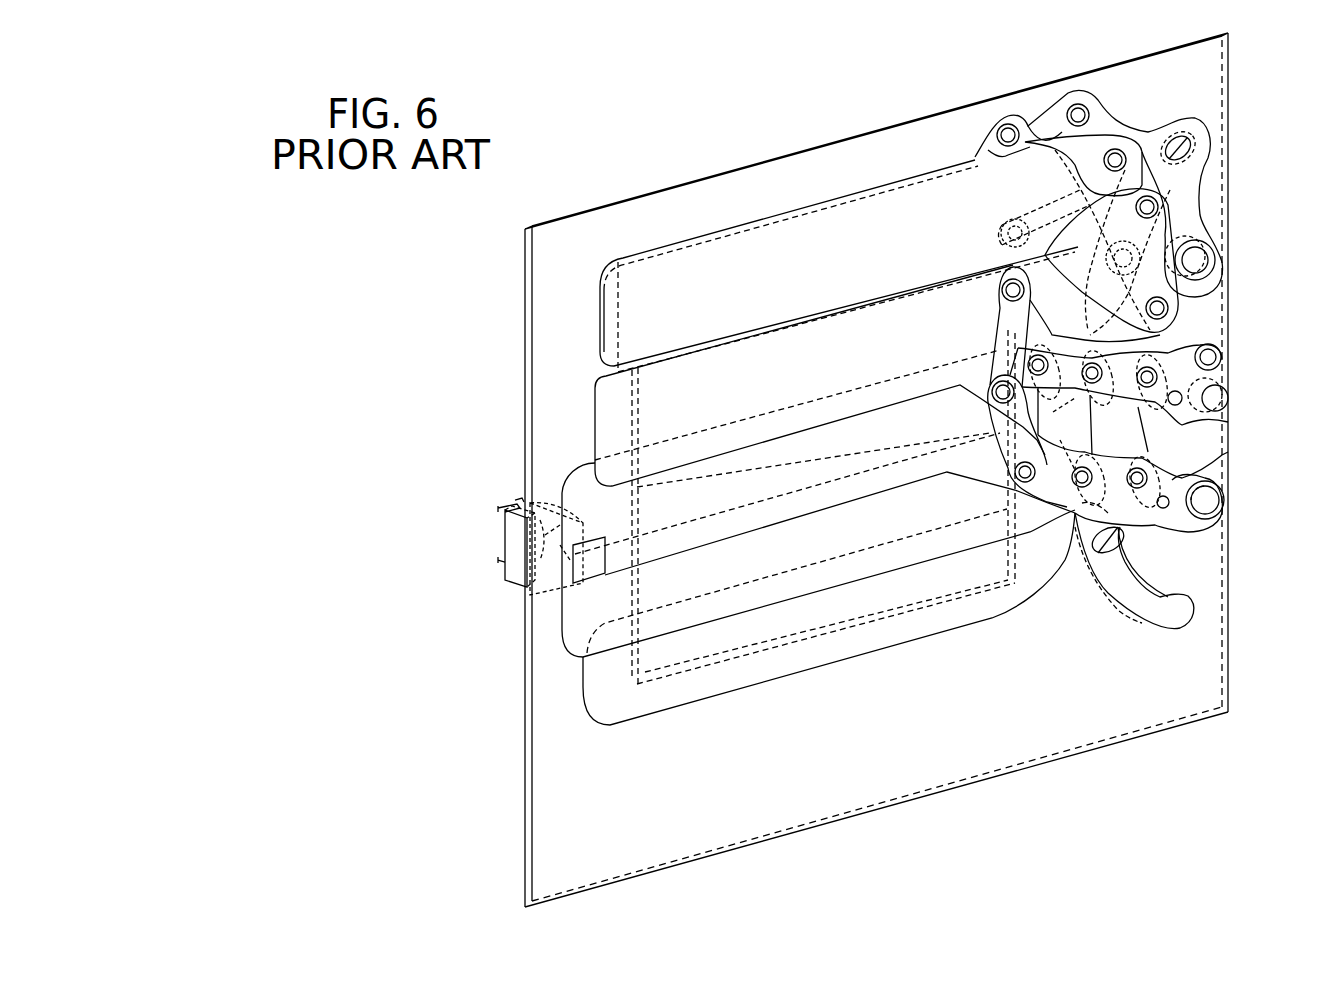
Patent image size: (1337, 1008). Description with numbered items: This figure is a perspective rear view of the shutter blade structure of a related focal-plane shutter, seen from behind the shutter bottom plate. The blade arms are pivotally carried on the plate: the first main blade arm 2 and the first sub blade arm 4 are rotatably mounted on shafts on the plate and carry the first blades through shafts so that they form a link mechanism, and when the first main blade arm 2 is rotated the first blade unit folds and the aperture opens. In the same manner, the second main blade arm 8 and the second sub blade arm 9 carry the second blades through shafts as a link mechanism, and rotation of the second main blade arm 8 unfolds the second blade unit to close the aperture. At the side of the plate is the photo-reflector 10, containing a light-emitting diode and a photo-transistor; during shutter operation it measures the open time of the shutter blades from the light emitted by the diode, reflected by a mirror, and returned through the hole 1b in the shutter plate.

The second main blade arm 8 is at (1187, 173).
The second sub blade arm 9 is at (1158, 228).
The first sub blade arm 4 is at (1188, 418).
The first main blade arm 2 is at (1140, 528).
The photo-reflector 10 is at (503, 542).
The hole 1b is at (573, 585).